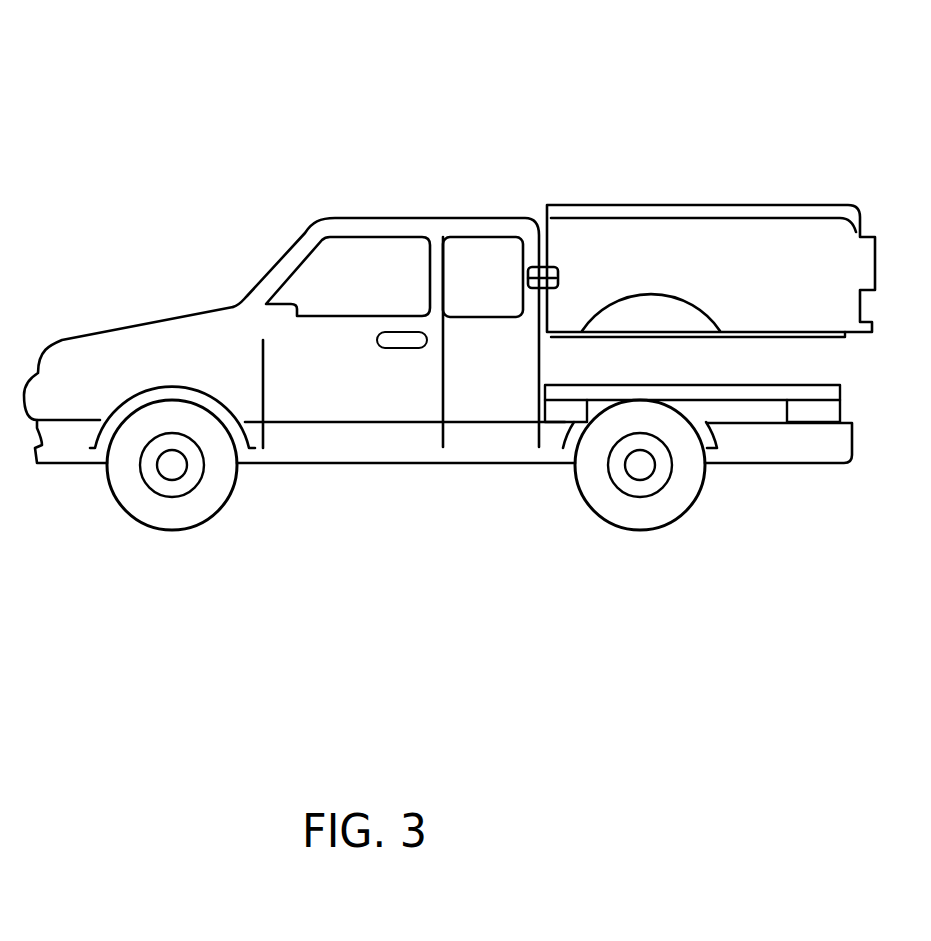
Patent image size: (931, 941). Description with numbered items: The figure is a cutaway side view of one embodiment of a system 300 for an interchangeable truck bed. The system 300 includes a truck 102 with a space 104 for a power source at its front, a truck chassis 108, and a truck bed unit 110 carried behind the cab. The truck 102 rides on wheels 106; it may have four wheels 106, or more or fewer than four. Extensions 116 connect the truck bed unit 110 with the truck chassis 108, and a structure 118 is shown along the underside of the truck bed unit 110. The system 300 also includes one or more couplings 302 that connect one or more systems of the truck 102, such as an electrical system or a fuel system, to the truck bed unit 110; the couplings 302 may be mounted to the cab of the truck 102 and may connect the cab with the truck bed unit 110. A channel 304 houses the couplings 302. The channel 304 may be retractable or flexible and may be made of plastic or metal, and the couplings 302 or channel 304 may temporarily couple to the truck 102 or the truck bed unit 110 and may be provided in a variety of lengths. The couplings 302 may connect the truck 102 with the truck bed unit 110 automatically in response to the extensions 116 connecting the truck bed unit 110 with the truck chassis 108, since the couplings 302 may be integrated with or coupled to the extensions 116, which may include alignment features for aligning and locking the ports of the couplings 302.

The system 300 is at (125, 57).
The truck 102 is at (432, 175).
The space for a power source 104 is at (102, 340).
The wheels 106 is at (642, 526).
The truck chassis 108 is at (757, 463).
The truck bed unit 110 is at (726, 205).
The extensions 116 is at (598, 385).
The mounting rail 118 is at (788, 338).
The couplings 302 is at (528, 278).
The channel 304 is at (560, 270).